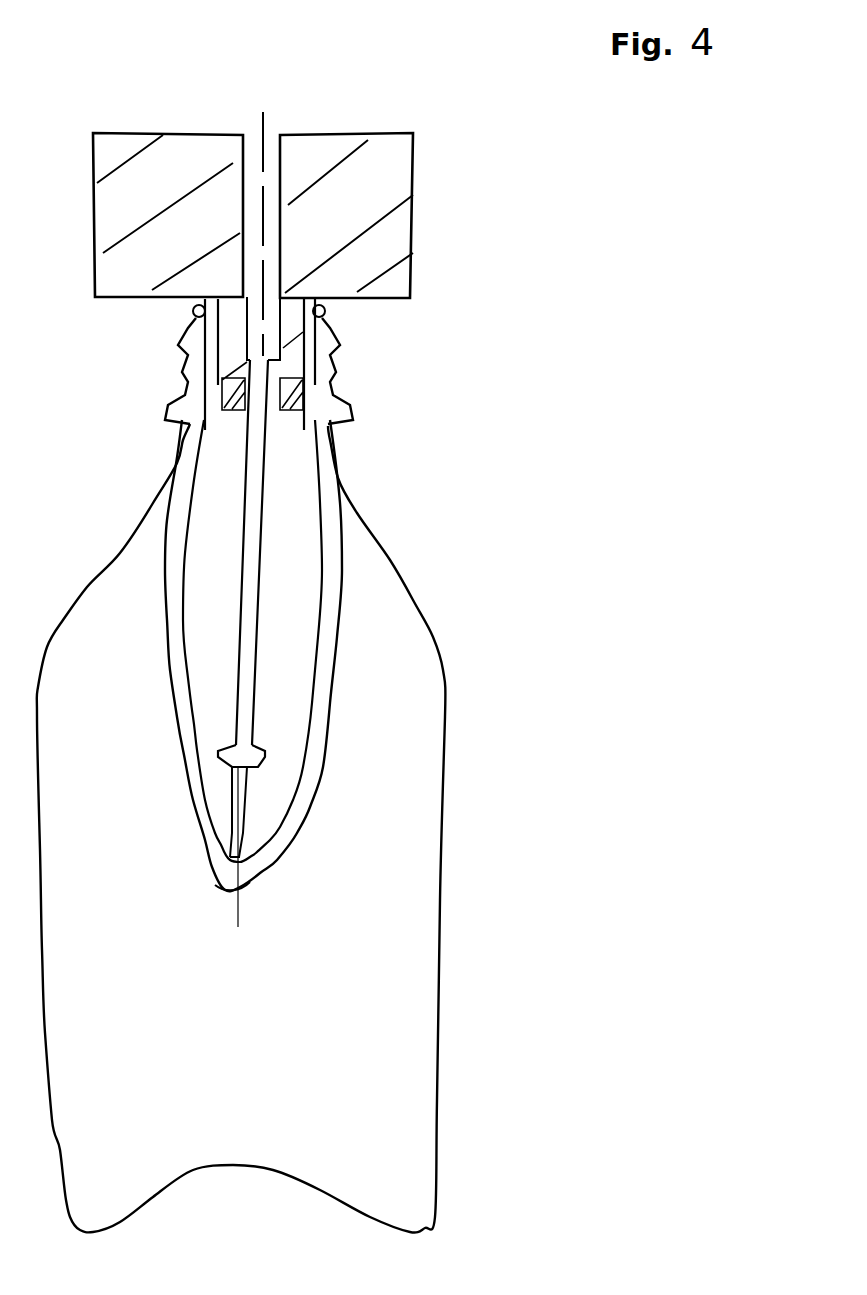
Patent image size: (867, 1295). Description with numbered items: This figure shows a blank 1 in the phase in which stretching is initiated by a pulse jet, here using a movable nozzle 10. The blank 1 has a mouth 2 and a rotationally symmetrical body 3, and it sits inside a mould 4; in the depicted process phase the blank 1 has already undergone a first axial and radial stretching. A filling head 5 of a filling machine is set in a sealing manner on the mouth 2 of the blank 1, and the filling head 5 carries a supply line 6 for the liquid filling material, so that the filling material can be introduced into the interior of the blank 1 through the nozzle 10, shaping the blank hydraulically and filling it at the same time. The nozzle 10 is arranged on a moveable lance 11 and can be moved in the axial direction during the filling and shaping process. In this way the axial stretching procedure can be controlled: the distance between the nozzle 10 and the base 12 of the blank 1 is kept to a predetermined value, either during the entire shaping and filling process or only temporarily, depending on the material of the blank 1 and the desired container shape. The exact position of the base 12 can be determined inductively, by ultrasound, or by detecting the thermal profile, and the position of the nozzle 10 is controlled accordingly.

The blank 1 is at (310, 628).
The mouth 2 is at (325, 373).
The rotationally symmetrical body 3 is at (287, 828).
The mould 4 is at (437, 1010).
The filling head 5 is at (357, 220).
The supply line 6 is at (263, 148).
The nozzle 10 is at (262, 758).
The moveable lance 11 is at (253, 500).
The base 12 is at (255, 868).